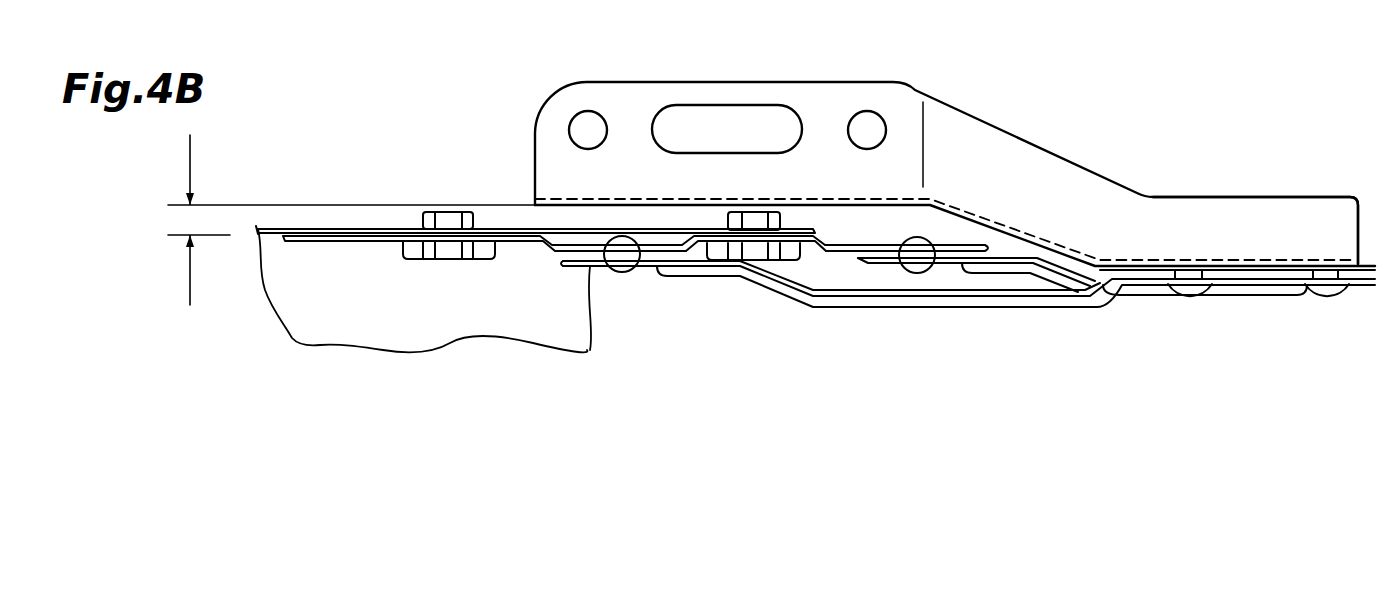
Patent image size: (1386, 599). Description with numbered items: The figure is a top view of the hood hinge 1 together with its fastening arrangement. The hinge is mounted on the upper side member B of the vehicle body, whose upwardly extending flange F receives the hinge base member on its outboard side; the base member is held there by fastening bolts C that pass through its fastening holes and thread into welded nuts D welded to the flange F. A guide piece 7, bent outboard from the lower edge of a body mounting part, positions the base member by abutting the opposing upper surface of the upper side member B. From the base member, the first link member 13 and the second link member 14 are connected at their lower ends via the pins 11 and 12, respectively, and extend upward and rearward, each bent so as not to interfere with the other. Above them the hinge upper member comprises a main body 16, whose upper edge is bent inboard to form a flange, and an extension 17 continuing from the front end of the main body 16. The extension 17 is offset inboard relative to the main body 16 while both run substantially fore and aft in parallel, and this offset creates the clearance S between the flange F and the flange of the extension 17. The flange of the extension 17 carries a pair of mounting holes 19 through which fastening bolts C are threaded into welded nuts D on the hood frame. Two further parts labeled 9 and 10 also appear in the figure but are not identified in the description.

The hood hinge 1 is at (1063, 50).
The guide piece 7 is at (487, 260).
The rail plate 9 is at (850, 307).
The guide plate 10 is at (1007, 270).
The pin 11 is at (628, 270).
The pin 12 is at (925, 268).
The first link member 13 is at (1197, 296).
The second link member 14 is at (1330, 293).
The main body 16 is at (1165, 220).
The extension 17 is at (632, 97).
The mounting hole 19 is at (584, 118).
The fastening bolt C is at (450, 220).
The welded nut D is at (447, 260).
The flange F is at (256, 231).
The upper side member B is at (352, 308).
The clearance S is at (350, 220).